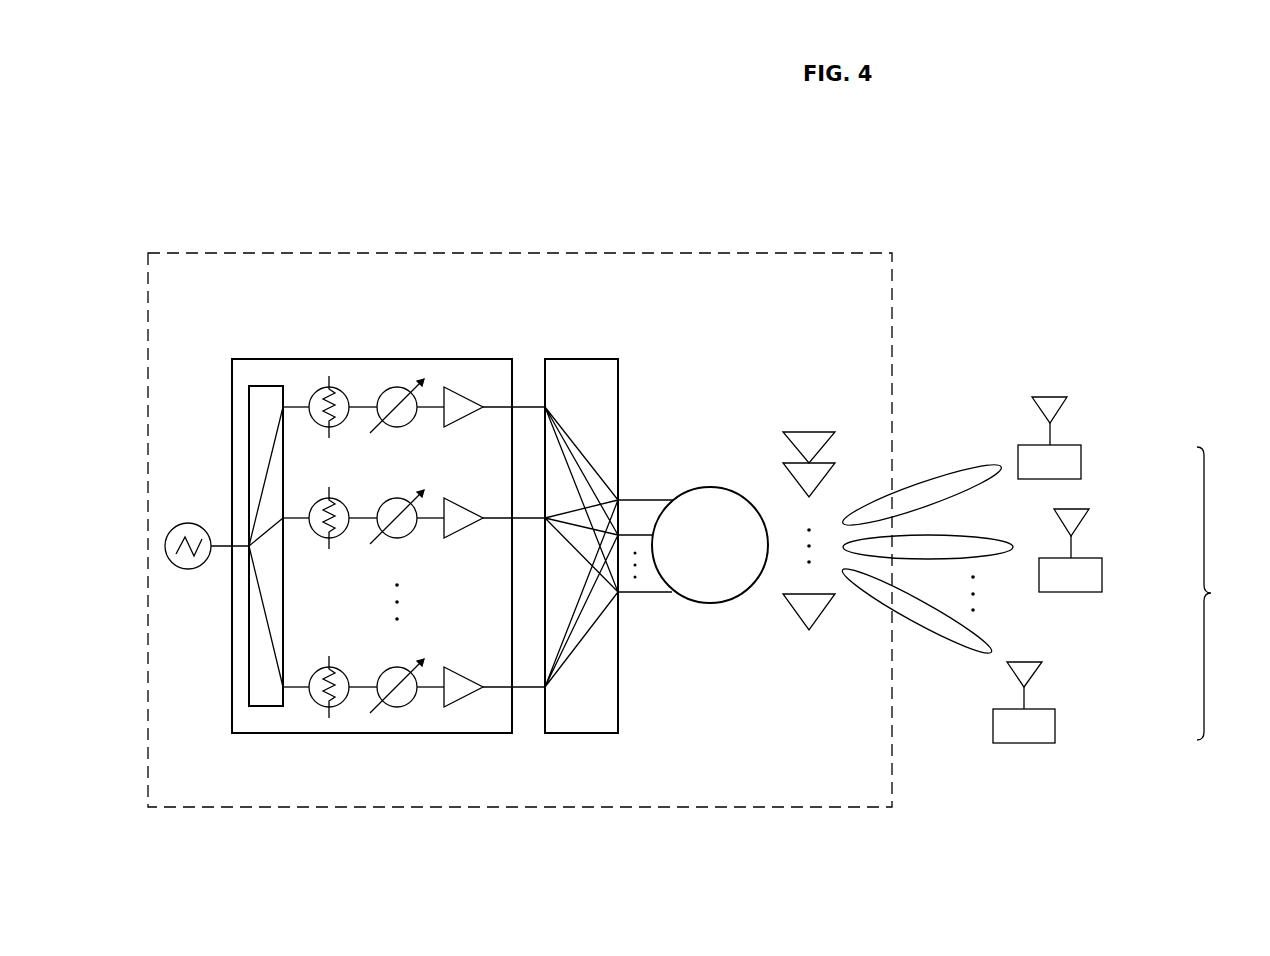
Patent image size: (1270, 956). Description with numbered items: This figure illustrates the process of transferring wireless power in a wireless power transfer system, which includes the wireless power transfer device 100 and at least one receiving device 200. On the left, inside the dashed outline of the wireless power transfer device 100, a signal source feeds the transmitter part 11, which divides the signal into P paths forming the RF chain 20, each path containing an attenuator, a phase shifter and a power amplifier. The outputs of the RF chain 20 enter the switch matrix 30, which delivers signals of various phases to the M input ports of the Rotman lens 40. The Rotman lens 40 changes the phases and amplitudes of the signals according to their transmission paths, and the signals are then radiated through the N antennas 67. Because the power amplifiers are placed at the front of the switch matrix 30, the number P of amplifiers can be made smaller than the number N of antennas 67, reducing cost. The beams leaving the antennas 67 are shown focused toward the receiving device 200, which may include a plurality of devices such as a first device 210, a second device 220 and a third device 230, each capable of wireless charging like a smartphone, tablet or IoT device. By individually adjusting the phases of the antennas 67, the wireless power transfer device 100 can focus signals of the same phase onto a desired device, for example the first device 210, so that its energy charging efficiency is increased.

The wireless power transfer device 100 is at (677, 253).
The transmitter part 11 is at (265, 386).
The RF chain 20 is at (380, 359).
The switch matrix 30 is at (577, 359).
The Rotman lens 40 is at (710, 487).
The antennas 67 is at (808, 432).
The receiving device 200 is at (1125, 570).
The first device 210 is at (1081, 462).
The second device 220 is at (1102, 573).
The third device 230 is at (1055, 725).